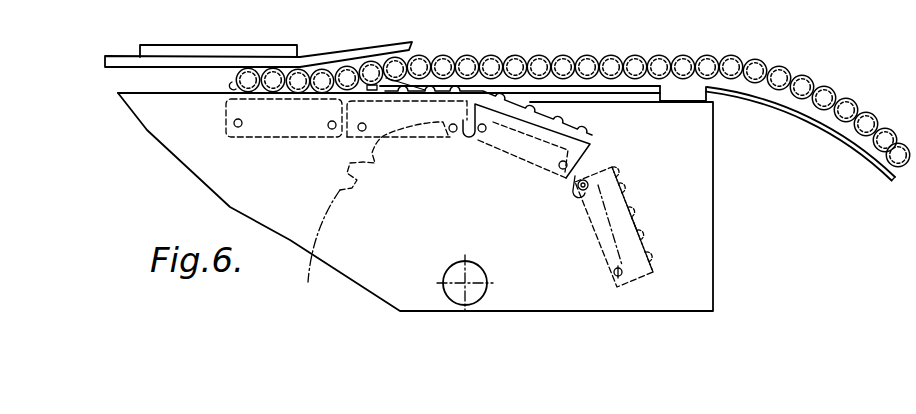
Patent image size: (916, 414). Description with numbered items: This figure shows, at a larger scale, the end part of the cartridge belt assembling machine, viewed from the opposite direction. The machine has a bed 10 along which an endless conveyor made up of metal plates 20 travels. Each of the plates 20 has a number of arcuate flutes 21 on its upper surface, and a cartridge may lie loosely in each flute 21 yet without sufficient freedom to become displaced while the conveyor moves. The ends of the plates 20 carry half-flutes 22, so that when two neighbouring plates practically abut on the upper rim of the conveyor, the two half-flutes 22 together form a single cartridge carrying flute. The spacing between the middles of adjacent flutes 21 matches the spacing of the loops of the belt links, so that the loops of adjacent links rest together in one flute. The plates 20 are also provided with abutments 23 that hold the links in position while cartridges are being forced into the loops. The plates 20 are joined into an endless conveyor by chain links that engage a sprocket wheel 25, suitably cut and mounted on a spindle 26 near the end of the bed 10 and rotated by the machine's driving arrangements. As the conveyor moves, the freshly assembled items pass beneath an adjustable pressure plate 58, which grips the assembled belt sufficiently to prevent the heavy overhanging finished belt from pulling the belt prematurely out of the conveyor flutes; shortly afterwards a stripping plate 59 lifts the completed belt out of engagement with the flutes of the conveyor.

The bed 10 is at (700, 191).
The plates 20 is at (586, 219).
The arcuate flutes 21 is at (627, 180).
The half-flutes 22 is at (610, 158).
The abutments 23 is at (636, 210).
The sprocket wheels 25 is at (367, 172).
The spindle 26 is at (477, 272).
The pressure plate 58 is at (312, 65).
The stripping plate 59 is at (550, 90).